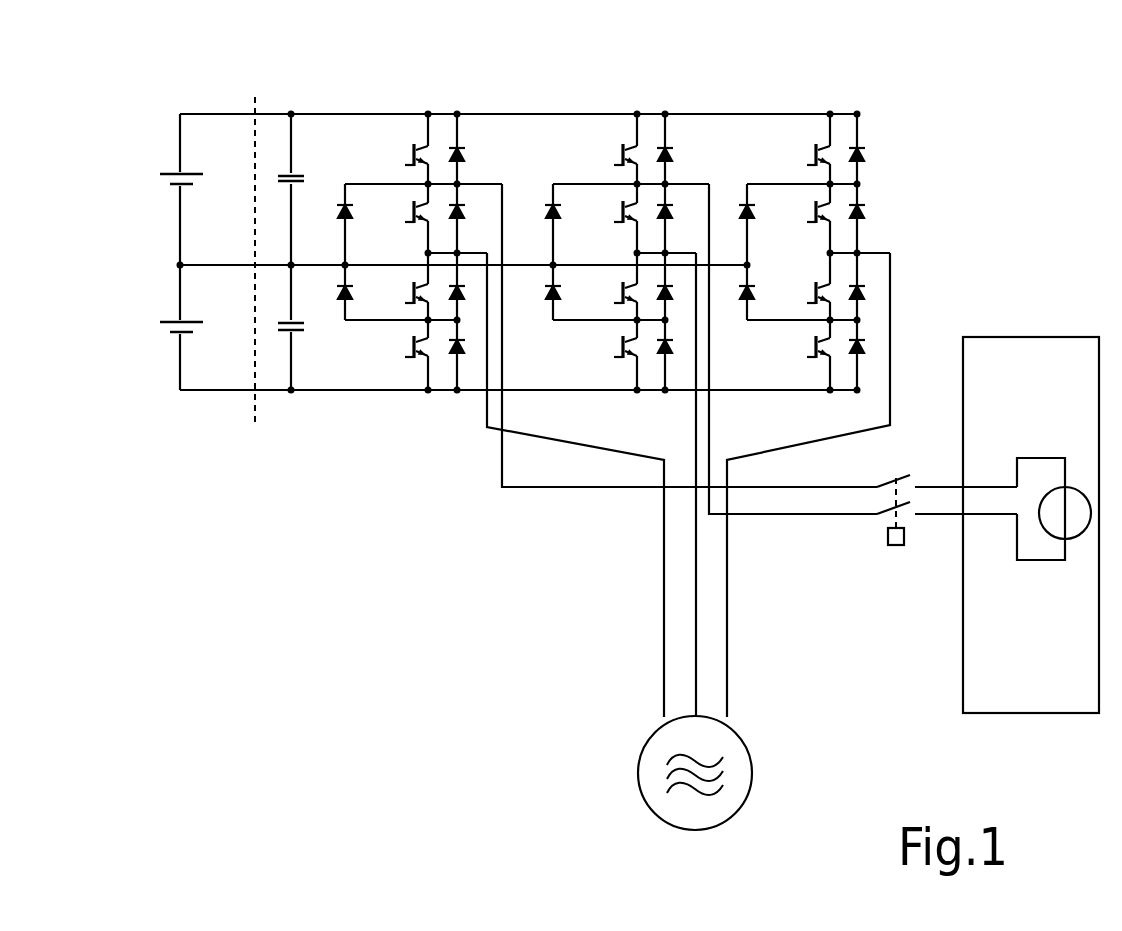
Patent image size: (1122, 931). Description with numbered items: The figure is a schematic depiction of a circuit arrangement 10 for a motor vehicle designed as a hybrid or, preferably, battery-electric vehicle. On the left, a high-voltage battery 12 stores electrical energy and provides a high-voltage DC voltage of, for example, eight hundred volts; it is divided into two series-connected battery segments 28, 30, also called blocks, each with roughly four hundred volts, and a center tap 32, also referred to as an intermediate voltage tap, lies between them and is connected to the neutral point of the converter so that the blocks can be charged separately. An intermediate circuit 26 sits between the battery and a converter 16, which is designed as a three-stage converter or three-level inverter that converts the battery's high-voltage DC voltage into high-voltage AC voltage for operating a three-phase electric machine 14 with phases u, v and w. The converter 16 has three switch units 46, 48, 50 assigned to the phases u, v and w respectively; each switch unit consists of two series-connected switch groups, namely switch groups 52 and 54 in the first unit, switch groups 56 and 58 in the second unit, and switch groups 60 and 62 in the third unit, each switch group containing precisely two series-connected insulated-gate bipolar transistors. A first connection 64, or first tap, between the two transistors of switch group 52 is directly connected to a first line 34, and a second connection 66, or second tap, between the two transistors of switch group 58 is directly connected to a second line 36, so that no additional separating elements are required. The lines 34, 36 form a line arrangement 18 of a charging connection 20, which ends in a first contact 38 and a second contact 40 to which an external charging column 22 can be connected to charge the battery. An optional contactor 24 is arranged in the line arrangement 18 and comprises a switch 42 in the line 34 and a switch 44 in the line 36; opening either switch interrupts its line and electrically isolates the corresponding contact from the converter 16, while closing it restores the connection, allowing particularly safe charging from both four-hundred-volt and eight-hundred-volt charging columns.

The circuit arrangement 10 is at (938, 68).
The high-voltage battery 12 is at (213, 410).
The electric machine 14 is at (642, 798).
The converter 16 is at (750, 98).
The line arrangement 18 is at (826, 545).
The charging connection 20 is at (893, 560).
The charging column 22 is at (1036, 352).
The contactor 24 is at (895, 442).
The intermediate circuit 26 is at (290, 405).
The first battery segment 28 is at (152, 172).
The second battery segment 30 is at (152, 322).
The center tap 32 is at (160, 264).
The first line 34 is at (822, 487).
The second line 36 is at (798, 514).
The first contact 38 is at (950, 487).
The second contact 40 is at (948, 515).
The first switch 42 is at (905, 473).
The second switch 44 is at (910, 506).
The first switch unit 46 is at (447, 105).
The second switch unit 48 is at (653, 102).
The third switch unit 50 is at (840, 100).
The switch group 52 is at (402, 133).
The switch group 54 is at (414, 385).
The switch group 56 is at (617, 138).
The switch group 58 is at (617, 385).
The switch group 60 is at (853, 142).
The switch group 62 is at (770, 385).
The first connection 64 is at (475, 152).
The second connection 66 is at (673, 286).